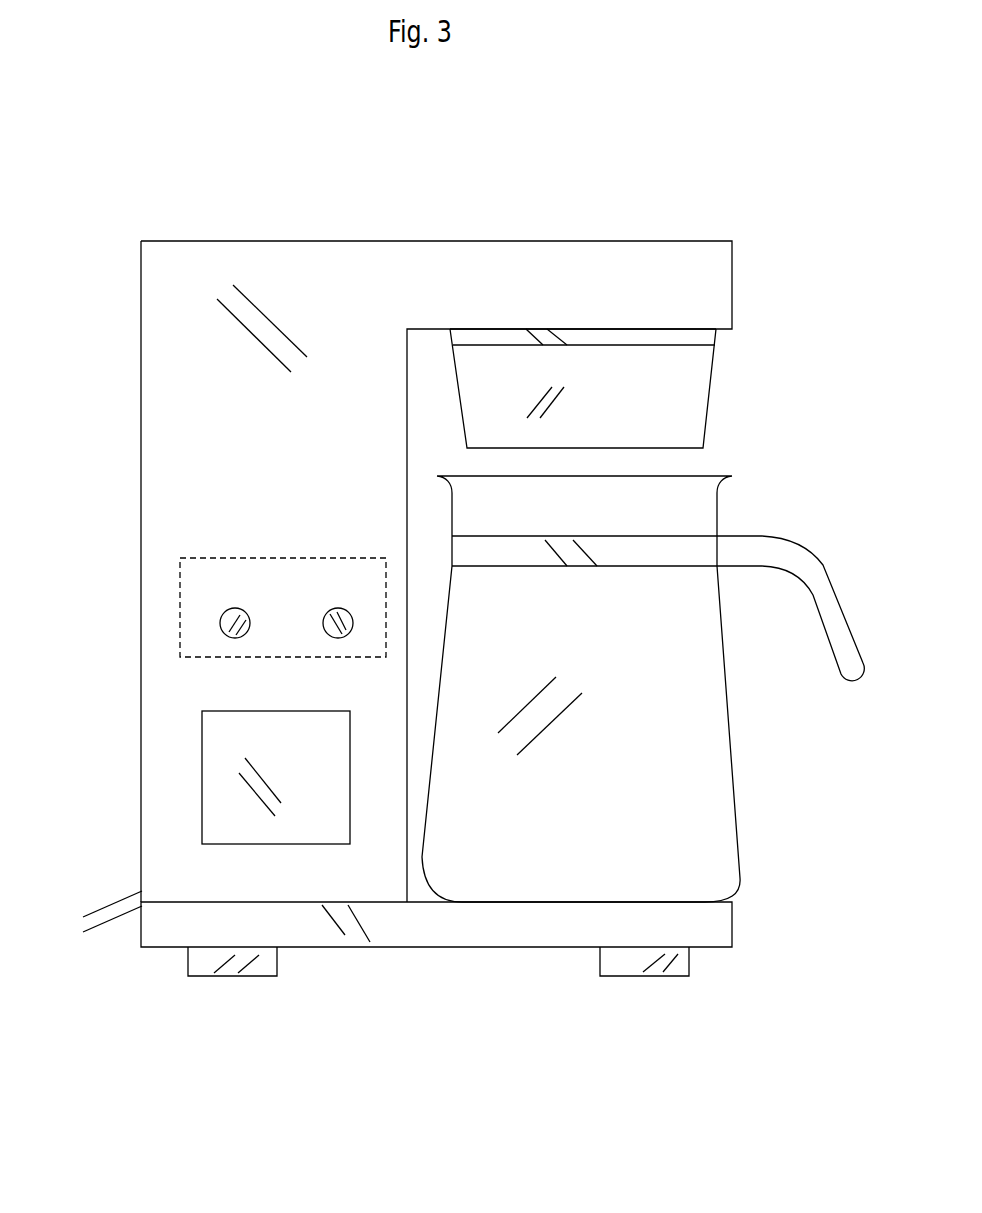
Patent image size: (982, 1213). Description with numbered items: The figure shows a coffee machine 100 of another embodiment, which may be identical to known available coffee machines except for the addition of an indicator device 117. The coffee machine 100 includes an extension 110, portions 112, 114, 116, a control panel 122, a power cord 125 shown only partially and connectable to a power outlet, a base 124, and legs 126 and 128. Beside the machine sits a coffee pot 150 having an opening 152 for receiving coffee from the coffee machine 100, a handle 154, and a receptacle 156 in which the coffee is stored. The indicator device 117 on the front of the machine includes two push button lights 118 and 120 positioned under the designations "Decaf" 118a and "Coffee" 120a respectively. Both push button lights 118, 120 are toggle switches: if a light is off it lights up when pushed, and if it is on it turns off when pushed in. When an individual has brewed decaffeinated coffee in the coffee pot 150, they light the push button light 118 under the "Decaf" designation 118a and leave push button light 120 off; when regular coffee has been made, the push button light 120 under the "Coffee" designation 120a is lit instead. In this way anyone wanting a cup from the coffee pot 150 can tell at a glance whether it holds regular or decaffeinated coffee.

The coffee machine 100 is at (600, 211).
The extension 110 is at (492, 282).
The portion 112 is at (680, 397).
The portion 114 is at (698, 340).
The portion 116 is at (234, 387).
The indicator device 117 is at (273, 562).
The push button light 118 is at (222, 622).
The designation "Decaf" 118a is at (218, 570).
The push button light 120 is at (330, 635).
The designation "Coffee" 120a is at (340, 572).
The control panel 122 is at (223, 772).
The base 124 is at (165, 925).
The power cord 125 is at (127, 900).
The leg 126 is at (205, 962).
The leg 128 is at (618, 960).
The coffee pot 150 is at (748, 517).
The opening 152 is at (705, 474).
The handle 154 is at (782, 552).
The receptacle 156 is at (702, 738).